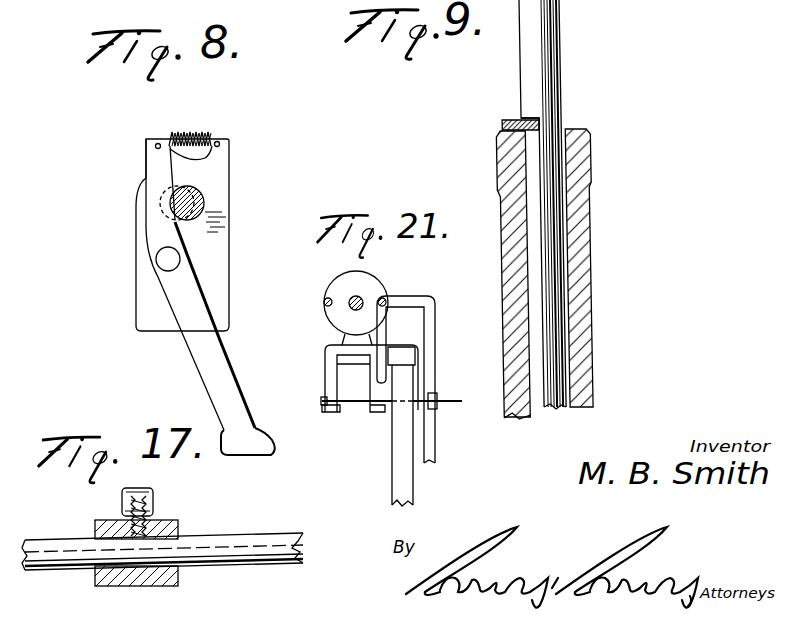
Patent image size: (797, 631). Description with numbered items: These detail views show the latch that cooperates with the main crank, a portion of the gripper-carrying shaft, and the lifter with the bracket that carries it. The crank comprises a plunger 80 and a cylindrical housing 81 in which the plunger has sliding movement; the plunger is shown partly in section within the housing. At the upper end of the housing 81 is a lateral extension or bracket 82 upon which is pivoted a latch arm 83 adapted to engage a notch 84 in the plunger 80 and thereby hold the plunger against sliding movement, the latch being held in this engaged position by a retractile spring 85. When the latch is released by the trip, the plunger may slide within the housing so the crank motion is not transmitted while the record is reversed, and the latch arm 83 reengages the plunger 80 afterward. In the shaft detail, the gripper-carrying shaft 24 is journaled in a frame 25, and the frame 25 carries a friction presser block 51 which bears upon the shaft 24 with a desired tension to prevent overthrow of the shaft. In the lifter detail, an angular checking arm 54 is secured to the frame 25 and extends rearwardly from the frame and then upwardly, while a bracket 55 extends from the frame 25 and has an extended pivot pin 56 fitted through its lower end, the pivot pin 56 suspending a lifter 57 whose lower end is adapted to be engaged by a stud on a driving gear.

In FIG. 21, the shaft 24 is at (362, 296).
In FIG. 17, the shaft 24 is at (243, 542).
In FIG. 21, the frame 25 is at (326, 307).
In FIG. 17, the frame 25 is at (177, 583).
In FIG. 17, the friction presser block 51 is at (142, 532).
In FIG. 21, the angular checking arm 54 is at (435, 328).
In FIG. 21, the bracket 55 is at (420, 382).
In FIG. 21, the pivot pin 56 is at (352, 407).
In FIG. 21, the lifter 57 is at (405, 483).
In FIG. 8, the plunger 80 is at (198, 199).
In FIG. 9, the plunger 80 is at (544, 37).
In FIG. 9, the cylindrical housing 81 is at (576, 232).
In FIG. 8, the lateral extension or bracket 82 is at (213, 258).
In FIG. 8, the latch arm 83 is at (217, 353).
In FIG. 9, the latch arm 83 is at (500, 125).
In FIG. 9, the notch 84 is at (537, 116).
In FIG. 8, the retractile spring 85 is at (193, 133).